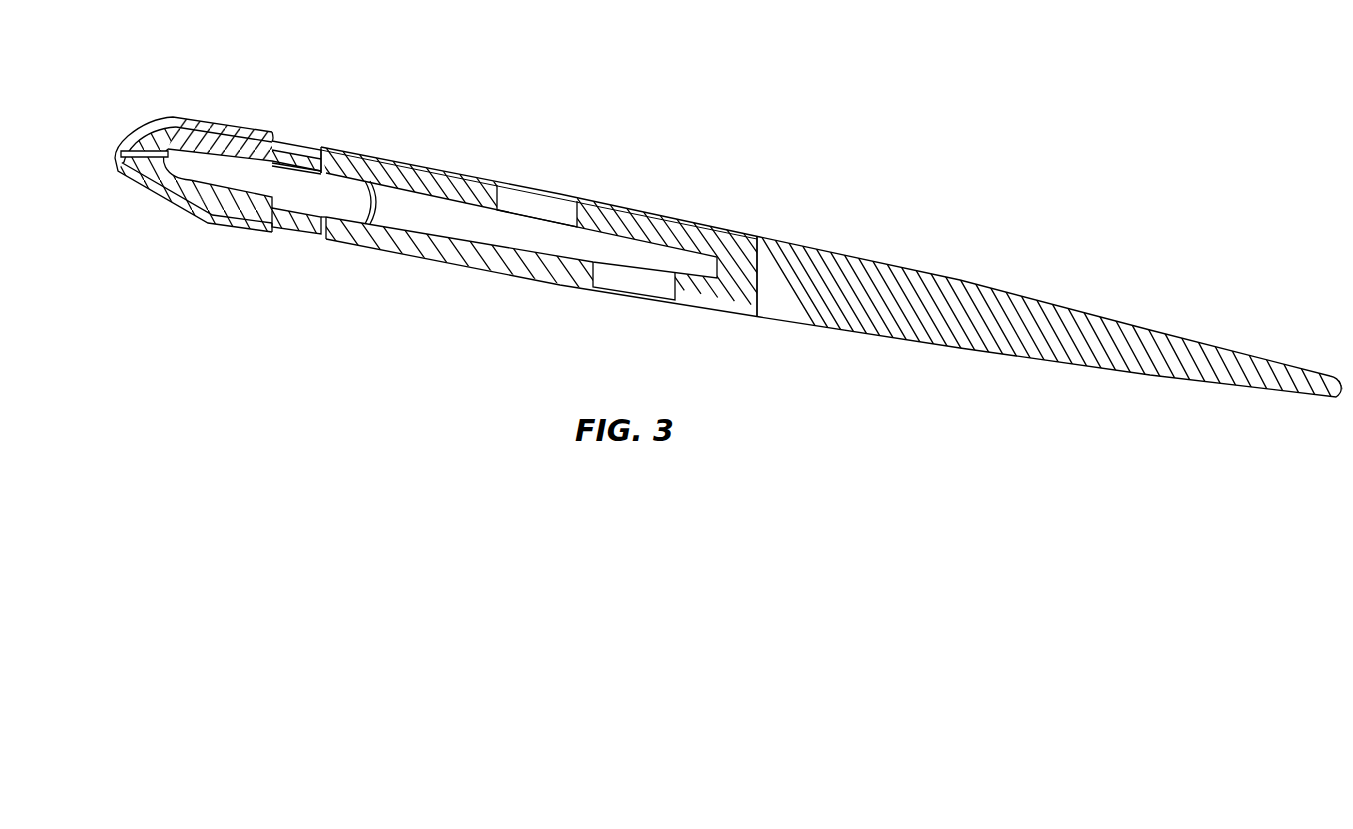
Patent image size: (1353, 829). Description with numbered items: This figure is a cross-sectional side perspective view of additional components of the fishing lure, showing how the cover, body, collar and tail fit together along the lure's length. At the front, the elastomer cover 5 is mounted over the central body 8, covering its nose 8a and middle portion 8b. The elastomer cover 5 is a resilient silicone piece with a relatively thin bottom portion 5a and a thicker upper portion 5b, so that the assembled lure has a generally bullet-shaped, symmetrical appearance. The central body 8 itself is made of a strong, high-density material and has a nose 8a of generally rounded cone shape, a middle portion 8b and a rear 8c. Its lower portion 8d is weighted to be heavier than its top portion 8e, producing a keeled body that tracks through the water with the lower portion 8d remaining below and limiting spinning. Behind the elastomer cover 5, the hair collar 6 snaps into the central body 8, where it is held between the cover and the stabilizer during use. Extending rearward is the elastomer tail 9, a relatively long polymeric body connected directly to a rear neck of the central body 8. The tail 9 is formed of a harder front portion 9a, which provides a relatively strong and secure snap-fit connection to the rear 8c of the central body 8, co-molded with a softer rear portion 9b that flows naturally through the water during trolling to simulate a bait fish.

The elastomer cover 5 is at (158, 95).
The bottom portion 5a is at (218, 228).
The upper portion 5b is at (207, 128).
The hair collar 6 is at (308, 128).
The central body 8 is at (158, 205).
The nose 8a is at (134, 188).
The middle portion 8b is at (230, 216).
The rear 8c is at (298, 215).
The lower portion 8d is at (190, 210).
The top portion 8e is at (216, 136).
The elastomer tail 9 is at (622, 198).
The front portion 9a is at (386, 168).
The rear portion 9b is at (1062, 317).